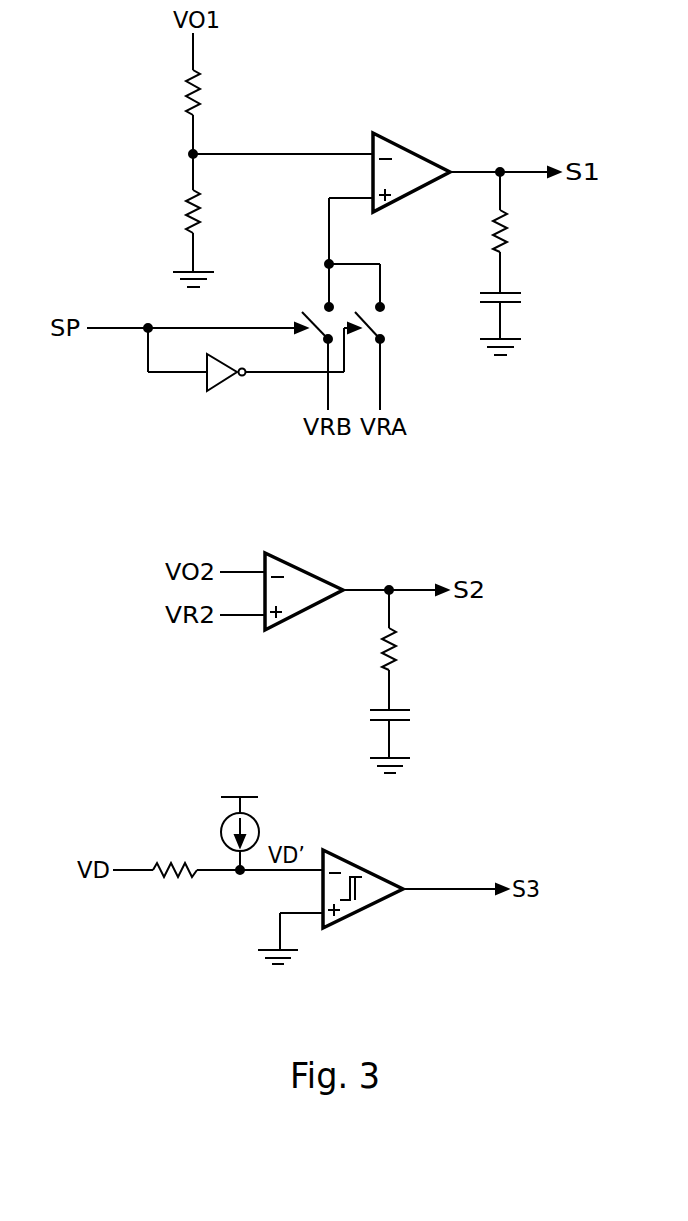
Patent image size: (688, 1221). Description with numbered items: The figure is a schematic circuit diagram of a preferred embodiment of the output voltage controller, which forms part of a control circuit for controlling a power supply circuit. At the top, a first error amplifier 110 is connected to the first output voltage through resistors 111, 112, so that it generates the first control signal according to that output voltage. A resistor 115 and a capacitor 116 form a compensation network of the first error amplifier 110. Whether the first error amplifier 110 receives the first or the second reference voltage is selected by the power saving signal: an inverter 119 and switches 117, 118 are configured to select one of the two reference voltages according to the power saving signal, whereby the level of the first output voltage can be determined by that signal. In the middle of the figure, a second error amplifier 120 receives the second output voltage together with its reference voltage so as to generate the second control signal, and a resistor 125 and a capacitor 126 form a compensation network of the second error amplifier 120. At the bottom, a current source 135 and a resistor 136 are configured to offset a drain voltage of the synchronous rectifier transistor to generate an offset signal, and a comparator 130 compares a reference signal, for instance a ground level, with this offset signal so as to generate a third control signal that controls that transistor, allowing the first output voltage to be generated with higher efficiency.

The first error amplifier 110 is at (396, 142).
The resistor 111 is at (165, 92).
The resistor 112 is at (165, 211).
The resistor 115 is at (522, 231).
The capacitor 116 is at (523, 298).
The switch 117 is at (388, 325).
The switch 118 is at (320, 310).
The inverter 119 is at (220, 383).
The second error amplifier 120 is at (287, 562).
The resistor 125 is at (413, 649).
The capacitor 126 is at (415, 716).
The comparator 130 is at (347, 855).
The current source 135 is at (218, 833).
The resistor 136 is at (175, 888).